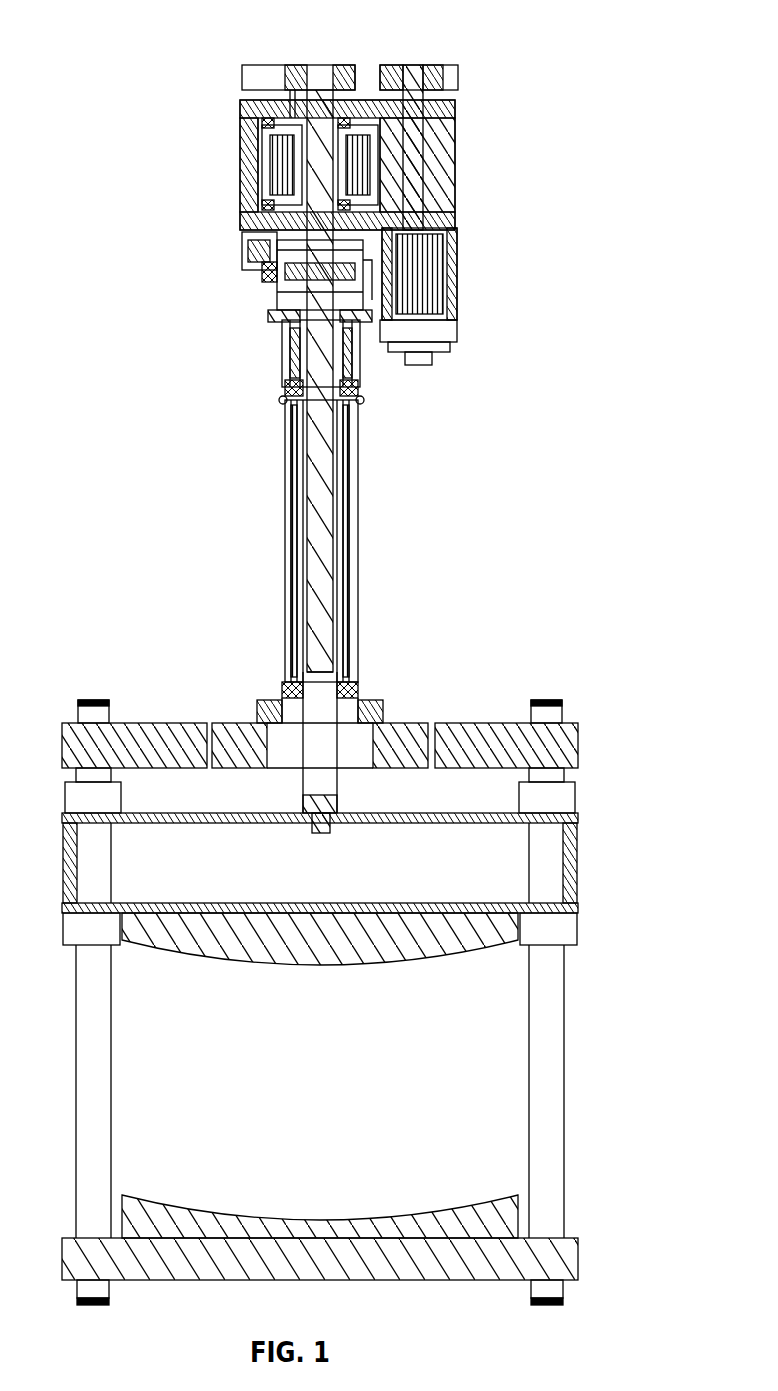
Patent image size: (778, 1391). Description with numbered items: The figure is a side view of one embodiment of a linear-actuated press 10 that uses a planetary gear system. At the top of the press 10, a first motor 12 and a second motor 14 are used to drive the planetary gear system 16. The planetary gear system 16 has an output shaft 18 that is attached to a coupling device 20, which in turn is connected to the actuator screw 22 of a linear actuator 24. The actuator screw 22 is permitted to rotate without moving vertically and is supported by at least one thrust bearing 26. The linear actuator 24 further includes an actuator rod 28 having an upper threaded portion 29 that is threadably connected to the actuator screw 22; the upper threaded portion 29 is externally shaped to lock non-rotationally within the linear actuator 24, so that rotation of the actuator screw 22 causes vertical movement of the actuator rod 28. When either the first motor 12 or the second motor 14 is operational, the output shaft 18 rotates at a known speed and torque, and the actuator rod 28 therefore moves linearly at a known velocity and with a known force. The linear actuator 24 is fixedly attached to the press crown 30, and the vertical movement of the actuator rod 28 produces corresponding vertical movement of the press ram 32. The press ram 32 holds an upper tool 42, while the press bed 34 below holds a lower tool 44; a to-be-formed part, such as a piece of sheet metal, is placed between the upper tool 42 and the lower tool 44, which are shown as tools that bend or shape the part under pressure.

The linear-actuated press 10 is at (562, 185).
The first motor 12 is at (250, 245).
The second motor 14 is at (410, 63).
The planetary gear system 16 is at (237, 162).
The output shaft 18 is at (410, 195).
The coupling device 20 is at (272, 272).
The actuator screw 22 is at (315, 557).
The linear actuator 24 is at (293, 447).
The thrust bearing 26 is at (300, 362).
The actuator rod 28 is at (270, 705).
The upper threaded portion 29 is at (364, 402).
The press crown 30 is at (462, 730).
The press ram 32 is at (512, 852).
The press bed 34 is at (568, 1262).
The upper tool 42 is at (306, 962).
The lower tool 44 is at (315, 1222).